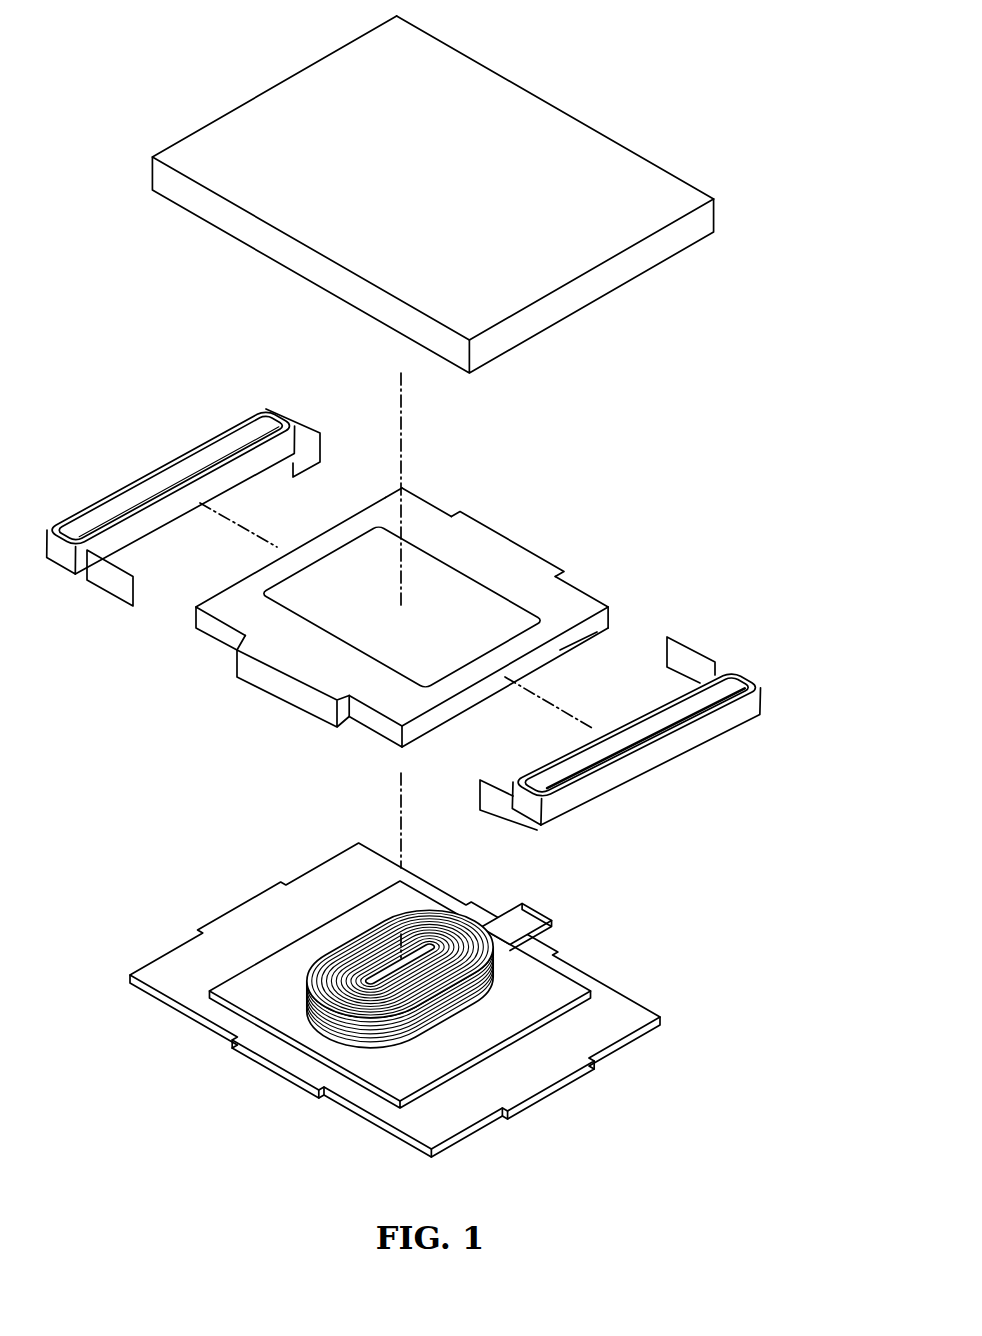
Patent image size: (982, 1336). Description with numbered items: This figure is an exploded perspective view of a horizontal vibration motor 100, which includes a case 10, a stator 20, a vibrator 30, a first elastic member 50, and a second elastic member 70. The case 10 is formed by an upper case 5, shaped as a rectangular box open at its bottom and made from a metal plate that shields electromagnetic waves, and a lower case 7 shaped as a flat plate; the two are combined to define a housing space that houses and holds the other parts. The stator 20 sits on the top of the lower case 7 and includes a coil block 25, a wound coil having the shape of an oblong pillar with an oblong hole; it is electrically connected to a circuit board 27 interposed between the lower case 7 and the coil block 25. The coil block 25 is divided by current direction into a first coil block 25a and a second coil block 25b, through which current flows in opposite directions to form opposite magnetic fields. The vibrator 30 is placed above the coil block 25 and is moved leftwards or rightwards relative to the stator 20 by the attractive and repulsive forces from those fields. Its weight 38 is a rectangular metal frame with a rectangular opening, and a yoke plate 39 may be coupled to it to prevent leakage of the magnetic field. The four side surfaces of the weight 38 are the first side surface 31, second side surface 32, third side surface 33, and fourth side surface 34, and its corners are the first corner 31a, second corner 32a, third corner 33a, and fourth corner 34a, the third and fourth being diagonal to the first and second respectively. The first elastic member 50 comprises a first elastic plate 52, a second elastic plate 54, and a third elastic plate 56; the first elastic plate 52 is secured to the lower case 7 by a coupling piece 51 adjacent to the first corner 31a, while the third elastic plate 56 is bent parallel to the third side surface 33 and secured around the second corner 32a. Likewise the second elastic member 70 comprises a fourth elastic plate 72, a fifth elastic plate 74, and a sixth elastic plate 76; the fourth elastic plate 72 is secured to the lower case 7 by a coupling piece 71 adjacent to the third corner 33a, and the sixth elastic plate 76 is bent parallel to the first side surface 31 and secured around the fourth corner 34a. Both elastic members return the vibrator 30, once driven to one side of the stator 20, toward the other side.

The horizontal vibration motor 100 is at (597, 100).
The case 10 is at (433, 191).
The upper case 5 is at (658, 178).
The first elastic member 50 is at (184, 498).
The first elastic plate 52 is at (185, 500).
The second elastic plate 54 is at (171, 477).
The third elastic plate 56 is at (235, 485).
The coupling piece 51 is at (290, 465).
The vibrator 30 is at (400, 608).
The first side surface 31 is at (426, 502).
The first corner 31a is at (394, 493).
The weight 38 is at (507, 544).
The yoke plate 39 is at (402, 607).
The fourth side surface 34 is at (581, 603).
The fourth corner 34a is at (620, 608).
The second side surface 32 is at (291, 553).
The second corner 32a is at (220, 628).
The third side surface 33 is at (293, 682).
The third corner 33a is at (375, 722).
The second elastic member 70 is at (648, 751).
The fourth elastic plate 72 is at (651, 756).
The fifth elastic plate 74 is at (646, 738).
The sixth elastic plate 76 is at (637, 735).
The coupling piece 71 is at (525, 835).
The lower case 7 is at (622, 992).
The stator 20 is at (420, 970).
The coil block 25 is at (432, 982).
The first coil block 25a is at (505, 975).
The second coil block 25b is at (400, 986).
The circuit board 27 is at (515, 927).